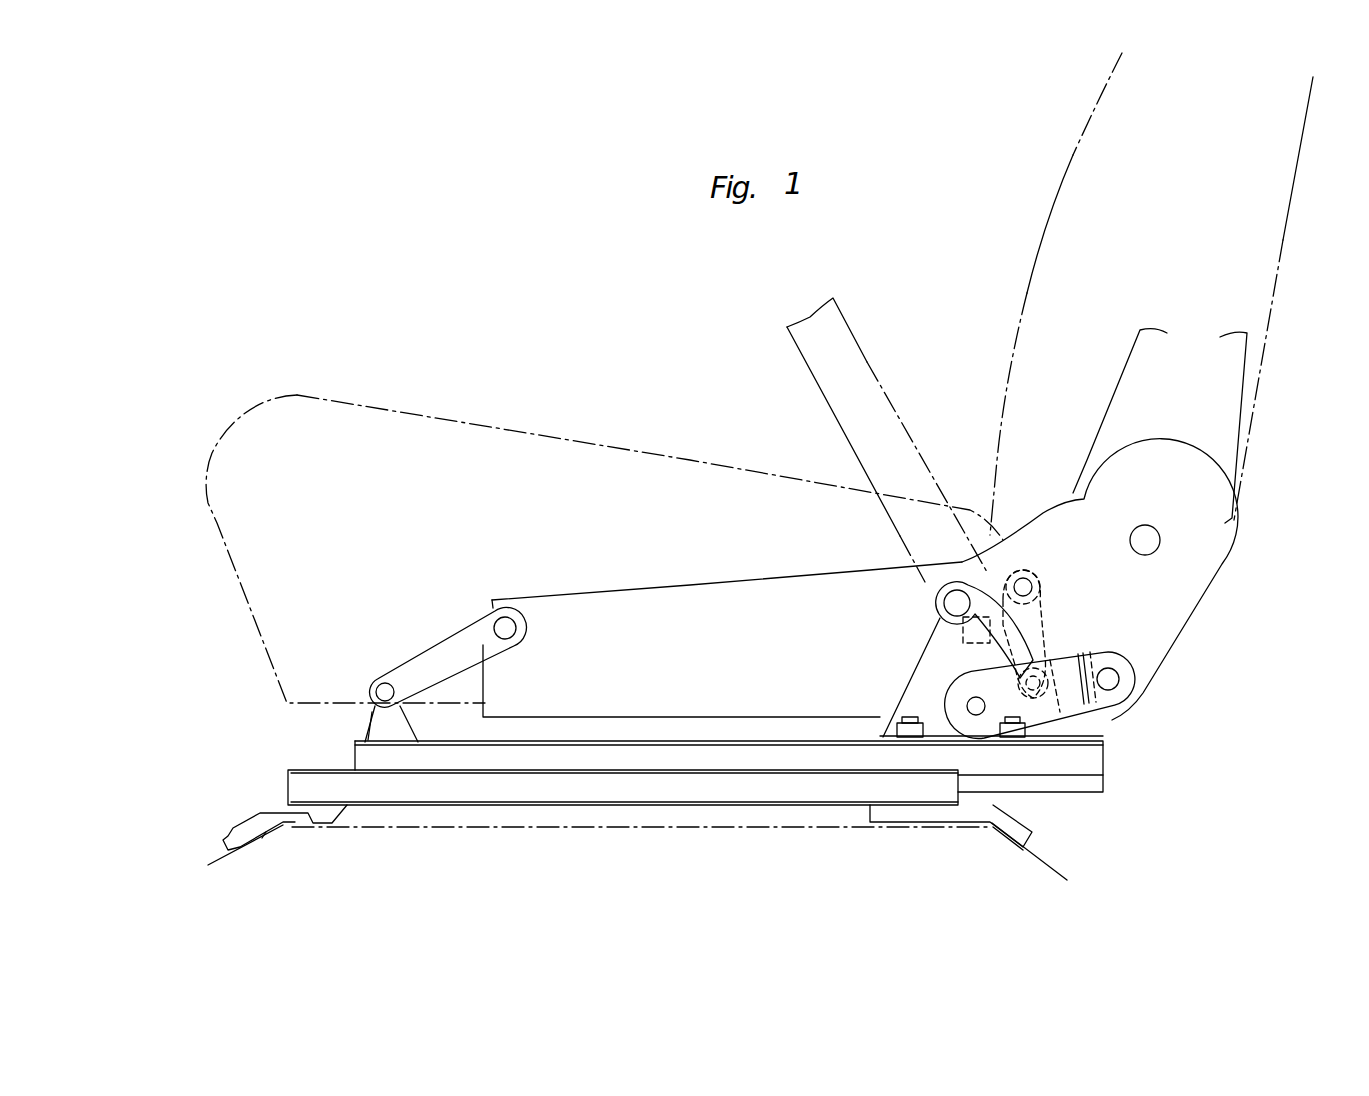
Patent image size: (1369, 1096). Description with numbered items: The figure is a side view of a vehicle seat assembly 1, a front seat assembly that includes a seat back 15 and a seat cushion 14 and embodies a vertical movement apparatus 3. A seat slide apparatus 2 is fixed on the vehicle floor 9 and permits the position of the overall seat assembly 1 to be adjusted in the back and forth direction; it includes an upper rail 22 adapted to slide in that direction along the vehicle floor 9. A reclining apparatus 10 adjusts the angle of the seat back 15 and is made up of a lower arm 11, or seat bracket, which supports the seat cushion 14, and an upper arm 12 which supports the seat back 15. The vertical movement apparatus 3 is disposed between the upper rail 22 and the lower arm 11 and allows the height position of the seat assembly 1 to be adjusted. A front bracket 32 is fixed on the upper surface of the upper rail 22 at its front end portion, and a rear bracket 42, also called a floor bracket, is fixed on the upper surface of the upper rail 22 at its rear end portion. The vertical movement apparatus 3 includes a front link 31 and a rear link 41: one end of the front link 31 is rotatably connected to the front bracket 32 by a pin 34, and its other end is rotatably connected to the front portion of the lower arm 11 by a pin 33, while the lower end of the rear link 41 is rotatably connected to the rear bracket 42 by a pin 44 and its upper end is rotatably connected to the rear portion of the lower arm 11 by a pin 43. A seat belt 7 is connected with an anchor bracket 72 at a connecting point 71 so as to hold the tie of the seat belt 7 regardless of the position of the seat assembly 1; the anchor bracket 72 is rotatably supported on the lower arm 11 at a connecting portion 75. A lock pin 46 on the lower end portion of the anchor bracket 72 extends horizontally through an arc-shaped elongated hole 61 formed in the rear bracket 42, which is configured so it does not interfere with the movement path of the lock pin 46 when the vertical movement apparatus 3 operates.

The vehicle seat assembly 1 is at (672, 272).
The seat slide apparatus 2 is at (543, 820).
The vertical movement apparatus 3 is at (995, 565).
The seat belt 7 is at (803, 360).
The vehicle floor 9 is at (612, 812).
The reclining apparatus 10 is at (1053, 430).
The lower arm 11 is at (703, 598).
The upper arm 12 is at (1127, 420).
The seat cushion 14 is at (571, 465).
The seat back 15 is at (1080, 216).
The upper rail 22 is at (508, 760).
The front link 31 is at (442, 647).
The front bracket 32 is at (372, 718).
The pin 33 is at (497, 630).
The pin 34 is at (397, 703).
The rear link 41 is at (1055, 712).
The rear bracket 42 is at (945, 582).
The pin 43 is at (1108, 679).
The pin 44 is at (977, 712).
The lock pin 46 is at (1085, 716).
The elongated hole 61 is at (950, 603).
The connecting point 71 is at (955, 644).
The anchor bracket 72 is at (1037, 612).
The connecting portion 75 is at (1043, 592).